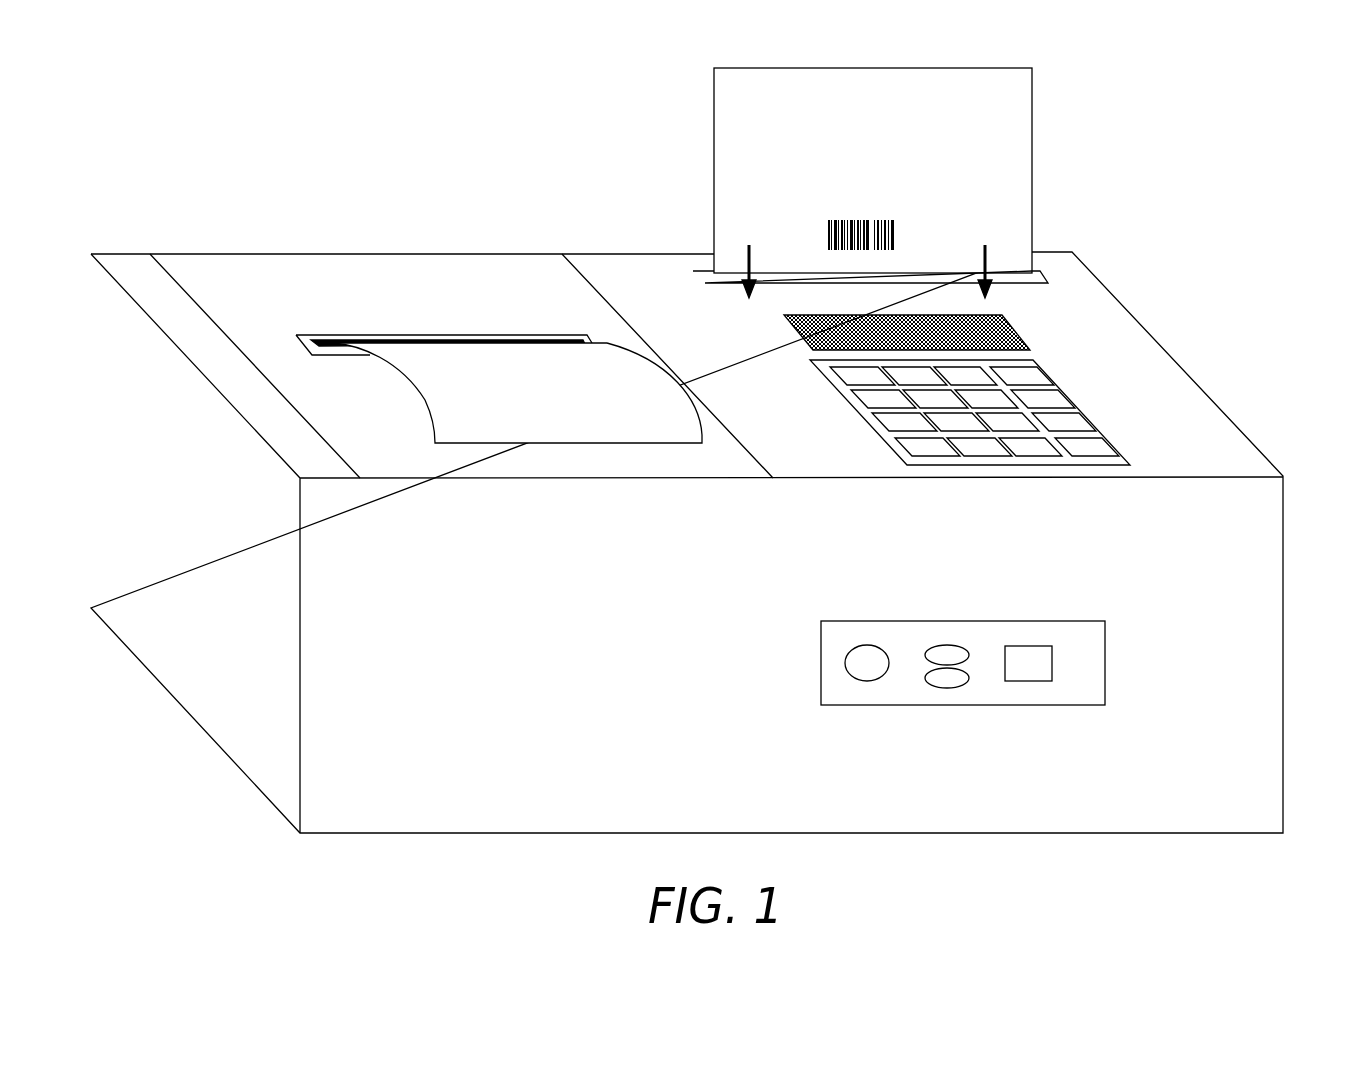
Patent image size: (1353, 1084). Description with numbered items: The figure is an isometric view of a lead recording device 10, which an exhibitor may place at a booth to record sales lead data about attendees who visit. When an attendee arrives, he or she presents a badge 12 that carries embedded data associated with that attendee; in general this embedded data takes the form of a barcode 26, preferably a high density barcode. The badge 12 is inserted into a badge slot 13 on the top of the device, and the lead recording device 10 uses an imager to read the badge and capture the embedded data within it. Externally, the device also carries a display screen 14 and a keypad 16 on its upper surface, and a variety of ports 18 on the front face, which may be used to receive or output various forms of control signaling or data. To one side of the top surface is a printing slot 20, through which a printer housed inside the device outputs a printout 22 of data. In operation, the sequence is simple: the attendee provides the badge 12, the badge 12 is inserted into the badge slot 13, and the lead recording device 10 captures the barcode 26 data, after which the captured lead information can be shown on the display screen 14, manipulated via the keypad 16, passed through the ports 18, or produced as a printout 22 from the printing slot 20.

The lead recording device 10 is at (344, 200).
The badge 12 is at (1032, 178).
The badge slot 13 is at (693, 271).
The display screen 14 is at (950, 315).
The keypad 16 is at (1063, 392).
The ports 18 is at (1062, 620).
The printing slot 20 is at (350, 335).
The printout 22 is at (595, 444).
The barcode 26 is at (942, 232).